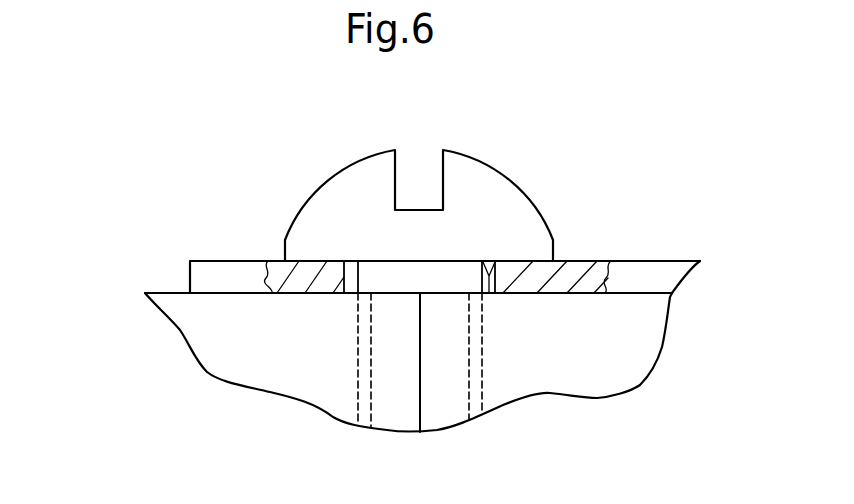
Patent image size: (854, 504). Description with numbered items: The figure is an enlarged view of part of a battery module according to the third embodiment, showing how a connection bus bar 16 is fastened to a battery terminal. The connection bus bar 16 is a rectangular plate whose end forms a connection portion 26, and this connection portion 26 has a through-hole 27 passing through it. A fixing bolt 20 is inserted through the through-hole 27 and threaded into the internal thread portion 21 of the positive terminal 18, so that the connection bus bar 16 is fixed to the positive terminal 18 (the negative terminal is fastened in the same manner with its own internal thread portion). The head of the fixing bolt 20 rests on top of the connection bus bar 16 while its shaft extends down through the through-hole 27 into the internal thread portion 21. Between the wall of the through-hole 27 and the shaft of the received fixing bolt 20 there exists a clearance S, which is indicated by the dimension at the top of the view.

The connection bus bar 16 is at (652, 259).
The positive terminal 18 is at (228, 353).
The fixing bolt 20 is at (512, 180).
The internal thread portion 21 is at (380, 367).
The connection portion 26 is at (247, 261).
The through-hole 27 is at (483, 261).
The clearance S is at (358, 261).